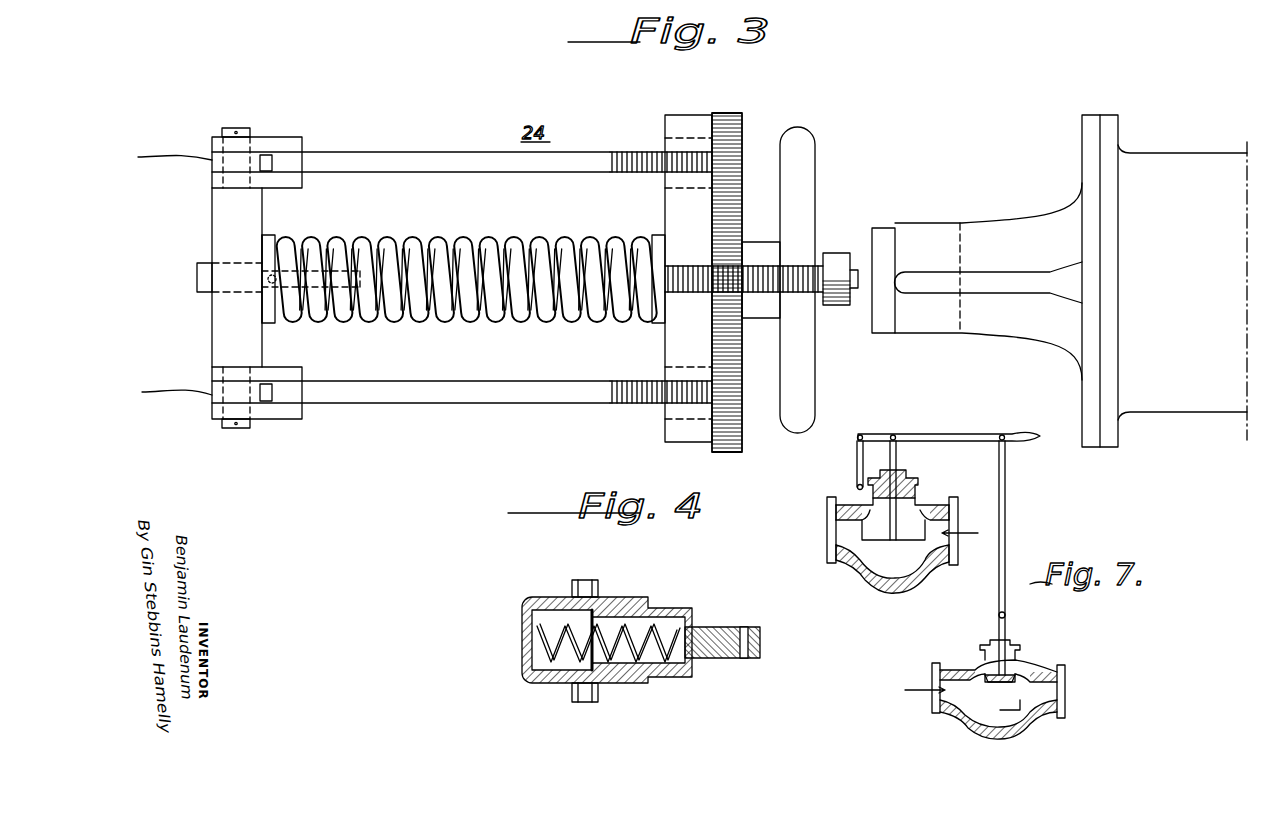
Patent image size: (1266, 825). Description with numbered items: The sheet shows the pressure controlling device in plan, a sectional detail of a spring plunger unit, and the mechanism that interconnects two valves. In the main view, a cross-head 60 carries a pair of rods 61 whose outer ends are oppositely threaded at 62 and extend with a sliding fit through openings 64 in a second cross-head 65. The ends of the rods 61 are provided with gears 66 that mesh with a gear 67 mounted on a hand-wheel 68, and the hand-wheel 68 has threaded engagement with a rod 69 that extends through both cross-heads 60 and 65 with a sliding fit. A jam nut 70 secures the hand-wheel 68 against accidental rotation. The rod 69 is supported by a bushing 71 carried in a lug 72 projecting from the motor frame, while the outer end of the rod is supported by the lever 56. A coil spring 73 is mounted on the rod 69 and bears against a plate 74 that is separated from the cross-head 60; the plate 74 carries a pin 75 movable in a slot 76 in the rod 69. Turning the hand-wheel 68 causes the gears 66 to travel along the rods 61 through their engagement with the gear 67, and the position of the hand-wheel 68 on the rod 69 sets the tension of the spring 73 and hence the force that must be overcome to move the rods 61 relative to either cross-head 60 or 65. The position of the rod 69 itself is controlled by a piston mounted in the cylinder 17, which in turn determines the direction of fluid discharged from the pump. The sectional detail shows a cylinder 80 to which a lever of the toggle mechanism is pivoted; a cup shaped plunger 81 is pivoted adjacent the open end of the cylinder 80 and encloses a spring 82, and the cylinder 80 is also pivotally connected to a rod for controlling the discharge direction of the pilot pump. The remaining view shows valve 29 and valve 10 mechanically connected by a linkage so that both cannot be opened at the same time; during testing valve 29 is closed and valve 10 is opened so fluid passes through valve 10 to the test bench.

In FIG. 7, the valve 10 is at (958, 697).
In FIG. 3, the cylinder 17 is at (1190, 405).
In FIG. 7, the valve 29 is at (835, 533).
In FIG. 3, the lever 56 is at (175, 269).
In FIG. 3, the cross-head 60 is at (249, 278).
In FIG. 3, the rods 61 is at (427, 152).
In FIG. 3, the threaded ends 62 is at (642, 152).
In FIG. 3, the openings 64 is at (690, 145).
In FIG. 3, the cross-head 65 is at (677, 207).
In FIG. 3, the gears 66 is at (742, 130).
In FIG. 3, the gear 67 is at (745, 240).
In FIG. 3, the hand-wheel 68 is at (800, 243).
In FIG. 3, the rod 69 is at (818, 300).
In FIG. 3, the jam nut 70 is at (835, 258).
In FIG. 3, the bushing 71 is at (885, 330).
In FIG. 3, the lug 72 is at (1015, 340).
In FIG. 3, the coil spring 73 is at (520, 243).
In FIG. 3, the plate 74 is at (265, 240).
In FIG. 3, the pin 75 is at (272, 279).
In FIG. 3, the slot 76 is at (360, 300).
In FIG. 4, the cylinder 80 is at (640, 597).
In FIG. 4, the cup shaped plunger 81 is at (718, 627).
In FIG. 4, the spring 82 is at (655, 650).